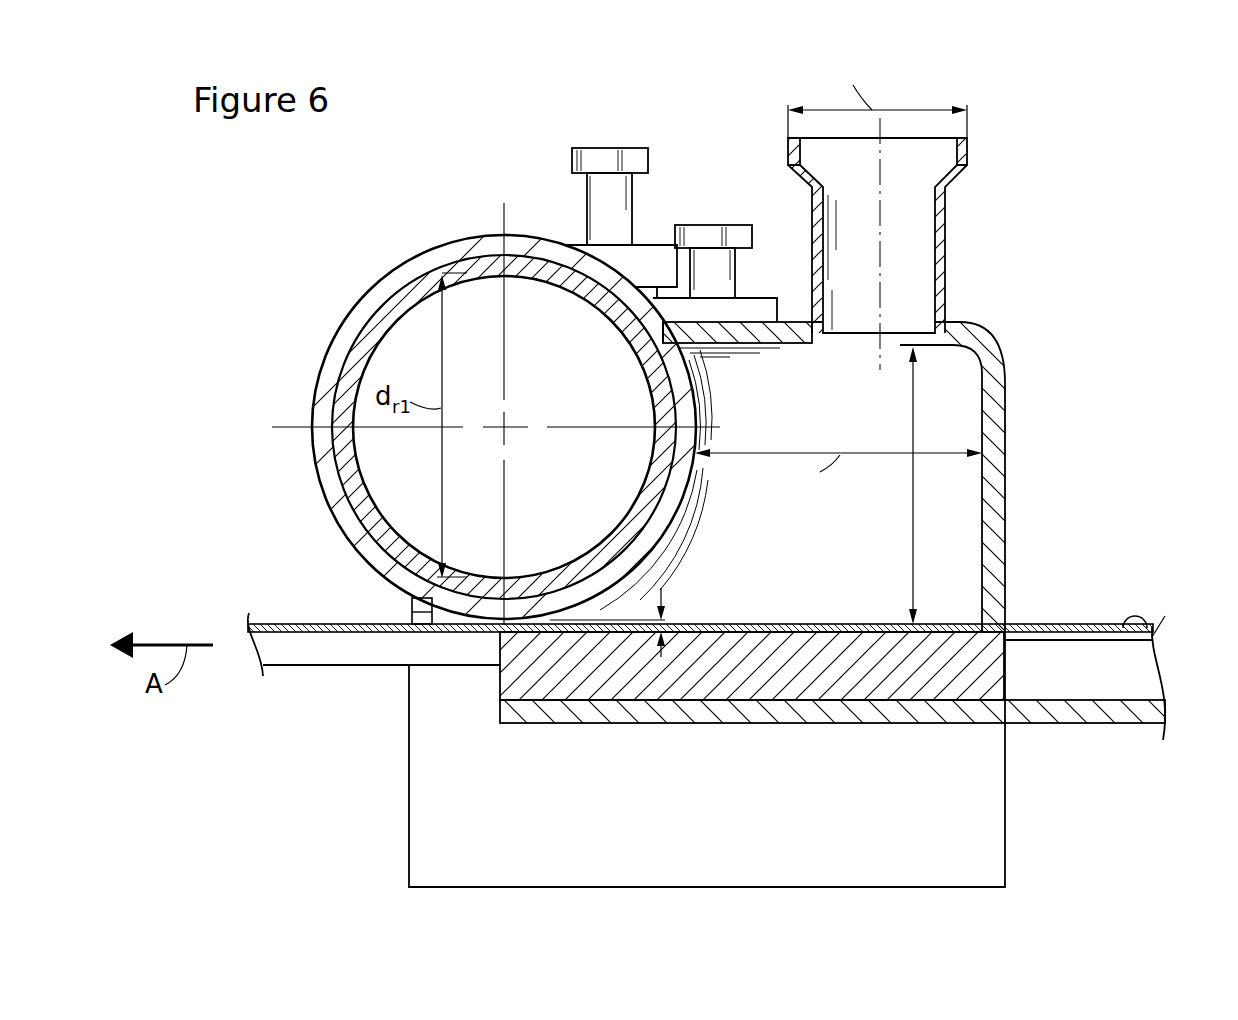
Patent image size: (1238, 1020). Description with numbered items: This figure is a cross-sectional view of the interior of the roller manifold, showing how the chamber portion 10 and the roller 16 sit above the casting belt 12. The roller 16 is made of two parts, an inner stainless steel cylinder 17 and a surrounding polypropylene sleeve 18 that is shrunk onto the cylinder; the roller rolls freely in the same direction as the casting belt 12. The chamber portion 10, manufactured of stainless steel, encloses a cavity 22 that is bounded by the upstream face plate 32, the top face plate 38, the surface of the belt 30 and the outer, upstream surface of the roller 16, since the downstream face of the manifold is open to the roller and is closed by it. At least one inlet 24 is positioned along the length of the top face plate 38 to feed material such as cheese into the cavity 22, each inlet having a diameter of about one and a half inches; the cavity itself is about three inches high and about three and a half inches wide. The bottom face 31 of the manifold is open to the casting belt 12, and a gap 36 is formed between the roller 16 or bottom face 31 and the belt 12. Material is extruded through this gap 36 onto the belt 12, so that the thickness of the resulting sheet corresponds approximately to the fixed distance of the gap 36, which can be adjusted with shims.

The chamber portion 10 is at (757, 572).
The casting belt 12 is at (312, 623).
The roller 16 is at (360, 280).
The stainless steel cylinder 17 is at (462, 258).
The polypropylene sleeve 18 is at (512, 250).
The cavity 22 is at (883, 517).
The inlet 24 is at (910, 137).
The surface of the belt 30 is at (950, 322).
The bottom face 31 is at (1155, 637).
The upstream face plate 32 is at (1005, 395).
The gap 36 is at (410, 615).
The top face plate 38 is at (793, 322).